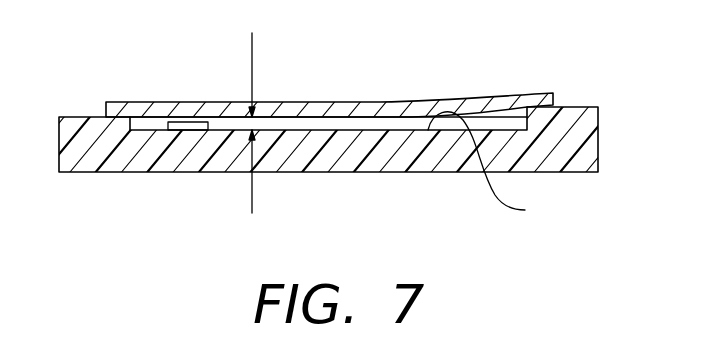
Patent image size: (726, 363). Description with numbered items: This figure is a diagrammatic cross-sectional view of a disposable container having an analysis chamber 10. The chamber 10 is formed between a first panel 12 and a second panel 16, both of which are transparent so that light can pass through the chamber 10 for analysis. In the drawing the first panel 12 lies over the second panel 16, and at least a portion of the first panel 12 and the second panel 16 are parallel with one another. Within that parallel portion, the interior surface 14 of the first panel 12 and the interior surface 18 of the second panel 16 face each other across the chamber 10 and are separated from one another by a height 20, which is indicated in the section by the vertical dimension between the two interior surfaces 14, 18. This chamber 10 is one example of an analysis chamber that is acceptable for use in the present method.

The chamber 10 is at (497, 124).
The first panel 12 is at (215, 102).
The interior surface 14 is at (405, 117).
The second panel 16 is at (363, 172).
The interior surface 18 is at (492, 167).
The height 20 is at (252, 197).